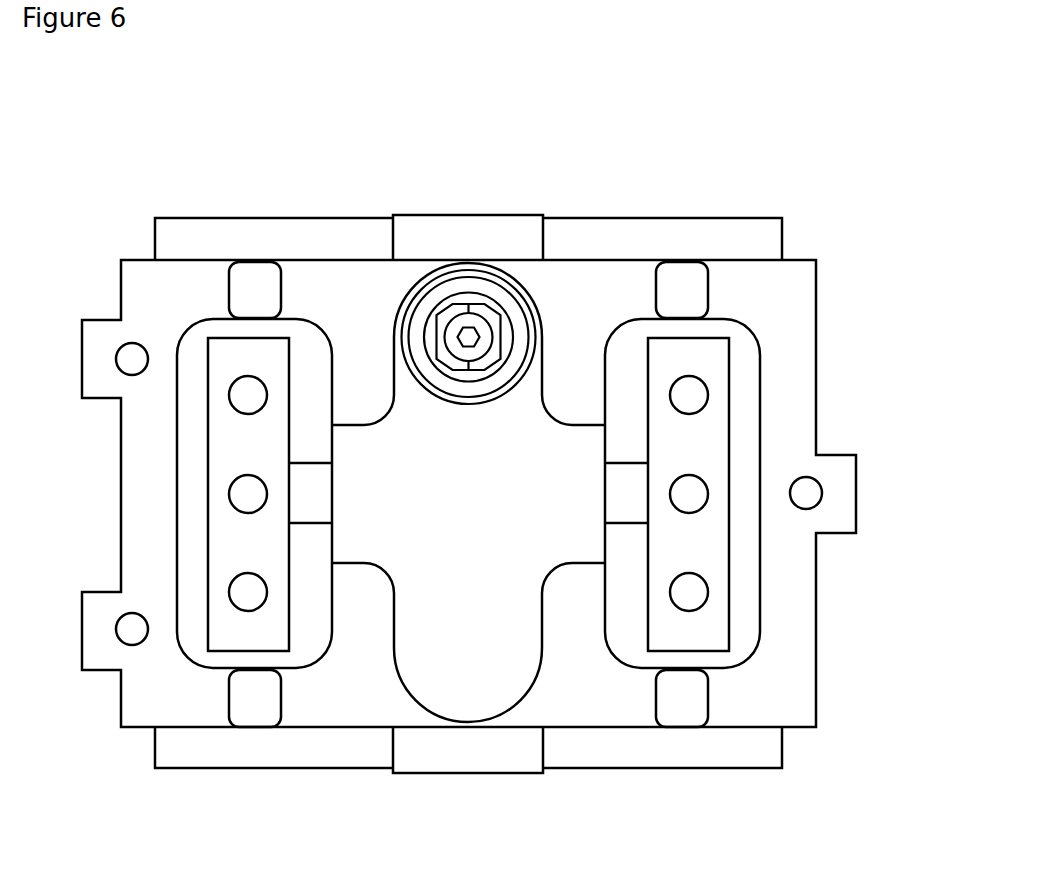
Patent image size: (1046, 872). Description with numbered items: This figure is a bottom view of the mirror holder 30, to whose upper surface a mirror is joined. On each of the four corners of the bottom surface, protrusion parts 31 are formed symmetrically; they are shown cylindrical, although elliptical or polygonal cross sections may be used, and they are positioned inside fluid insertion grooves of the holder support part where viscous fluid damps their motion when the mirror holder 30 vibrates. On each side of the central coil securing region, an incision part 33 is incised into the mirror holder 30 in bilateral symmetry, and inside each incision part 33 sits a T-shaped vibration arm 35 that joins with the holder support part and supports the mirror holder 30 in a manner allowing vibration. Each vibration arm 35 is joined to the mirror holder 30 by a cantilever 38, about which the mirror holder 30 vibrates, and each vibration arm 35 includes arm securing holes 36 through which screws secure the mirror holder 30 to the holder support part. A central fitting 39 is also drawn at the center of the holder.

The mirror holder 30 is at (783, 158).
The protrusion part 31 is at (252, 273).
The incision part 33 is at (192, 643).
The vibration arm 35 is at (220, 515).
The arm securing hole 36 is at (245, 394).
The cantilever 38 is at (625, 503).
The plug 39 is at (467, 318).